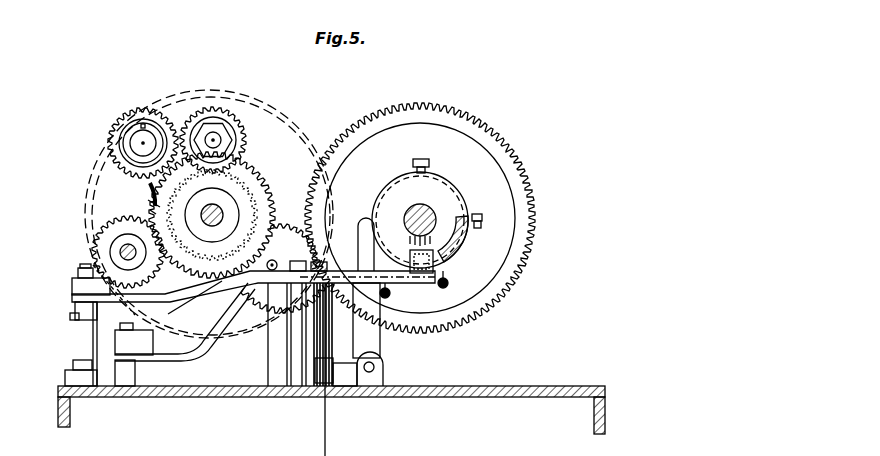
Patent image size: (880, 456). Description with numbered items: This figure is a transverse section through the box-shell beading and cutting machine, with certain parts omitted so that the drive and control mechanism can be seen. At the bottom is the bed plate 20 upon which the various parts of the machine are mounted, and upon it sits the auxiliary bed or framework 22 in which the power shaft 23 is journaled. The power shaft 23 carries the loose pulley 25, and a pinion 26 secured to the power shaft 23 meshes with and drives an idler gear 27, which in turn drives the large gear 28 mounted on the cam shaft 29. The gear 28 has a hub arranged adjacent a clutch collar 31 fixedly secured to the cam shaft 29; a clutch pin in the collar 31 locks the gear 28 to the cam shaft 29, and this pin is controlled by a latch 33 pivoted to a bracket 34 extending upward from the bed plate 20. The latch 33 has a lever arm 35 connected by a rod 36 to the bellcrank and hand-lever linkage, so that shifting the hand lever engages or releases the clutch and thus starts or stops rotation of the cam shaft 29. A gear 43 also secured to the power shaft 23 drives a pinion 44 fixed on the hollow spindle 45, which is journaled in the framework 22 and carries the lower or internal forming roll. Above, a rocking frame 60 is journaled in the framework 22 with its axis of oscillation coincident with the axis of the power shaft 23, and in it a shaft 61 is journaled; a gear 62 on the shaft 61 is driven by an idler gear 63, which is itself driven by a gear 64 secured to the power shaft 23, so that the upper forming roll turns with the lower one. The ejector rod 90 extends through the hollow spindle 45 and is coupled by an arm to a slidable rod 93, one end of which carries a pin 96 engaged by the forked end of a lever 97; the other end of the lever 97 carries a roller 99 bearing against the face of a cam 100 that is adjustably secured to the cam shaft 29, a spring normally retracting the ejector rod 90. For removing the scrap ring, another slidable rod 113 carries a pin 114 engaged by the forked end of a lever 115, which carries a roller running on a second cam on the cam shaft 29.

The bed plate 20 is at (245, 397).
The auxiliary bed or framework 22 is at (150, 210).
The power shaft 23 is at (226, 207).
The loose pulley 25 is at (197, 92).
The pinion 26 is at (248, 303).
The idler gear 27 is at (313, 160).
The gear 28 is at (483, 125).
The cam shaft 29 is at (437, 213).
The clutch collar 31 is at (388, 190).
The latch 33 is at (362, 247).
The bracket 34 is at (383, 378).
The lever arm 35 is at (345, 367).
The rod 36 is at (330, 417).
The gear 43 is at (150, 203).
The pinion 44 is at (126, 253).
The hollow spindle 45 is at (117, 243).
The rocking frame 60 is at (150, 185).
The shaft 61 is at (143, 140).
The gear 62 is at (122, 125).
The idler gear 63 is at (243, 126).
The gear 64 is at (252, 168).
The ejector rod 90 is at (80, 283).
The slidable rod 93 is at (72, 318).
The pin 96 is at (75, 304).
The lever 97 is at (185, 292).
The roller 99 is at (445, 270).
The cam 100 is at (455, 252).
The slidable rod 113 is at (136, 368).
The pin 114 is at (146, 330).
The lever 115 is at (205, 337).